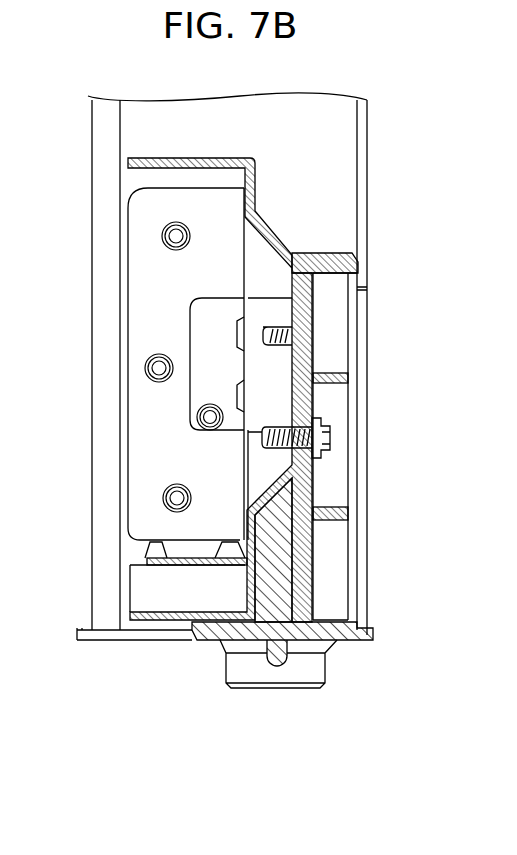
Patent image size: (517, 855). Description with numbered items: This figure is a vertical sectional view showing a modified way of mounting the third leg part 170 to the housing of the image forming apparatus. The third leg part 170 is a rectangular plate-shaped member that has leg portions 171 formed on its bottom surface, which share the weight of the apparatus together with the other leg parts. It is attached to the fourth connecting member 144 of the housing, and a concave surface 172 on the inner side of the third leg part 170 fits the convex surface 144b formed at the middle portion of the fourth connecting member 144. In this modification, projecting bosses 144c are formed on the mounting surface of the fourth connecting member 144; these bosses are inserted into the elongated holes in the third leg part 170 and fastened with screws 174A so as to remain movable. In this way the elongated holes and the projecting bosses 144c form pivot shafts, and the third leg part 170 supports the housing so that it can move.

The fourth connecting member 144 is at (257, 192).
The convex surface 144b is at (213, 603).
The projecting bosses 144c is at (290, 467).
The third leg part 170 is at (345, 253).
The leg portions 171 is at (305, 662).
The concave surface 172 is at (222, 643).
The screws 174A is at (318, 416).